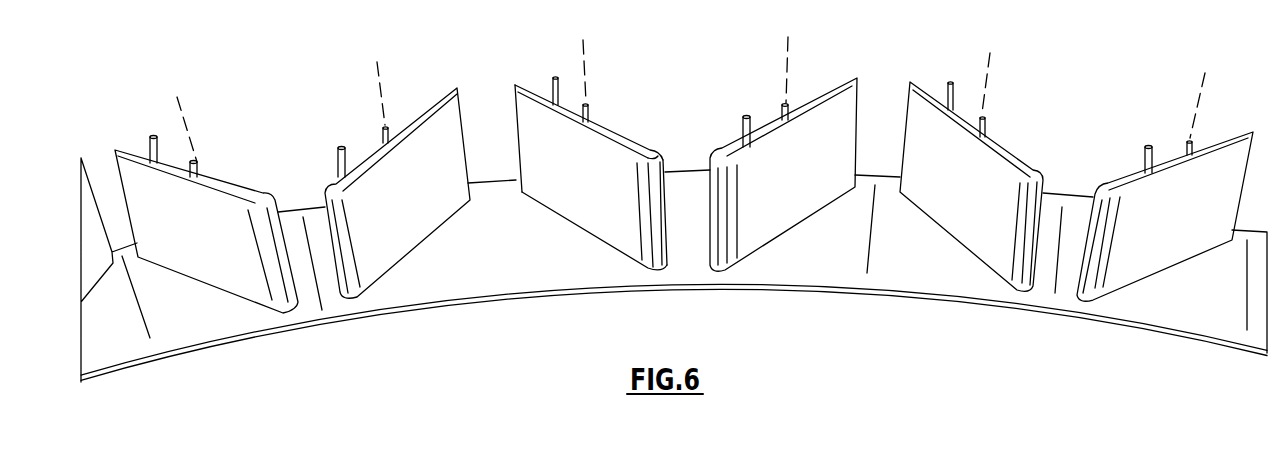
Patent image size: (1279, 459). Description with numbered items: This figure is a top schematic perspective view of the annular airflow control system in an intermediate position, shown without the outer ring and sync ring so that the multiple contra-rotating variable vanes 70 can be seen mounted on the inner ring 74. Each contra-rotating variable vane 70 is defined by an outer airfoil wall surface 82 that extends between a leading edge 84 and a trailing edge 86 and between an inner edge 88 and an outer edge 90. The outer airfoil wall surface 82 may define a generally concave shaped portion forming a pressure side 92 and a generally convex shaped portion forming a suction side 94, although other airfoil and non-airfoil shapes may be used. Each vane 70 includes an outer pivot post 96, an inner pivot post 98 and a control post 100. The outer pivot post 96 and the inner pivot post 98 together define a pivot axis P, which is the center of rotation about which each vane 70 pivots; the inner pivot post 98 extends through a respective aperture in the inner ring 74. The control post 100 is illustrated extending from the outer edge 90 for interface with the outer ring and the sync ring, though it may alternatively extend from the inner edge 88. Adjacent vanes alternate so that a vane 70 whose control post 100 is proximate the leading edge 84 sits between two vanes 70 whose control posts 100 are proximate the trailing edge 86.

The contra-rotating variable vane 70 is at (650, 125).
The inner ring 74 is at (560, 285).
The outer airfoil wall surface 82 is at (560, 163).
The leading edge 84 is at (663, 243).
The trailing edge 86 is at (514, 110).
The inner edge 88 is at (637, 270).
The outer edge 90 is at (570, 103).
The pressure side 92 is at (600, 184).
The suction side 94 is at (629, 124).
The outer pivot post 96 is at (590, 113).
The inner pivot post 98 is at (584, 240).
The control post 100 is at (148, 148).
The pivot axis P is at (183, 108).